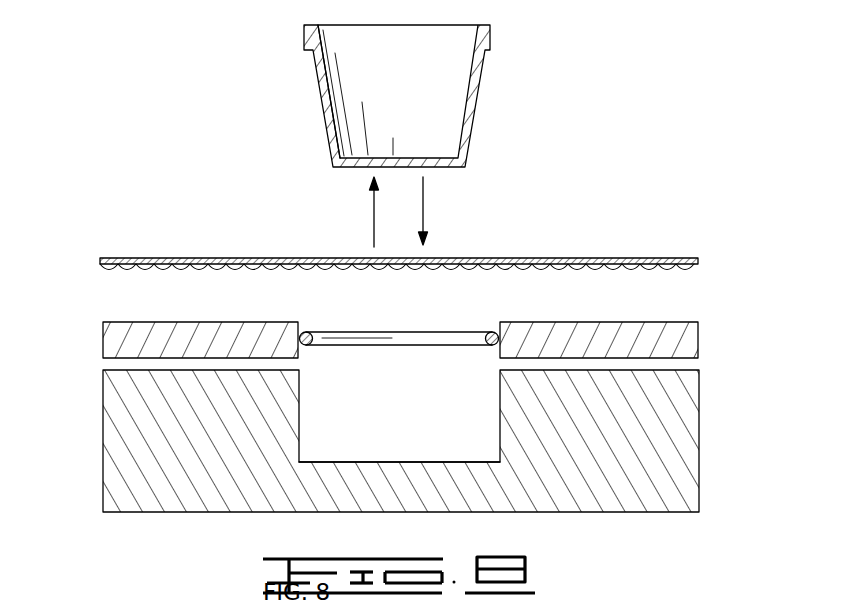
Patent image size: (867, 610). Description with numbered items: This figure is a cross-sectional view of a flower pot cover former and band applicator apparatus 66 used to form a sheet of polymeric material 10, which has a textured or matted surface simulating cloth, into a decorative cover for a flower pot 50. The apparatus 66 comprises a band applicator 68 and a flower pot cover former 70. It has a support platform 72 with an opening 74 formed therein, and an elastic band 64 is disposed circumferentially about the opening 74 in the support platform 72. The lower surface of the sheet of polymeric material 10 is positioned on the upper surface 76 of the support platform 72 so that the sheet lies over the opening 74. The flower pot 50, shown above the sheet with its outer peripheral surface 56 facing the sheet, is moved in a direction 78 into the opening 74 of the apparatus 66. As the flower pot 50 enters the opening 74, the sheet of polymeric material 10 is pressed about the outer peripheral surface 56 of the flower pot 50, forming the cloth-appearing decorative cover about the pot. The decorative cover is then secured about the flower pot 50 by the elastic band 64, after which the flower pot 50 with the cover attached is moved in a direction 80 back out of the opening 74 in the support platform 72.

The sheet of polymeric material 10 is at (648, 222).
The flower pot 50 is at (492, 80).
The outer peripheral surface 56 is at (320, 82).
The elastic band 64 is at (318, 347).
The flower pot cover former and band applicator apparatus 66 is at (566, 202).
The band applicator 68 is at (365, 318).
The flower pot cover former 70 is at (708, 423).
The support platform 72 is at (102, 342).
The opening 74 is at (445, 362).
The upper surface 76 is at (580, 320).
The direction 78 is at (426, 202).
The direction 80 is at (372, 217).